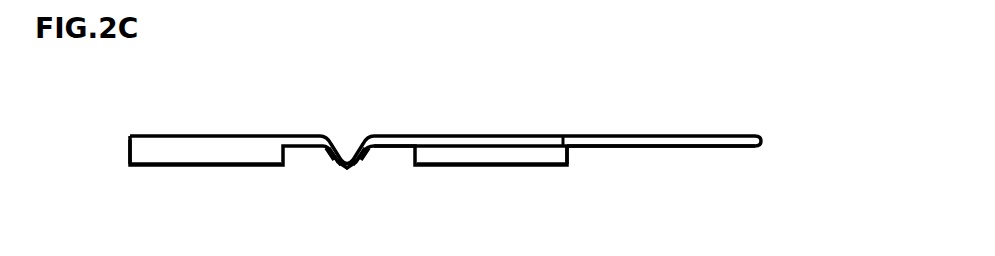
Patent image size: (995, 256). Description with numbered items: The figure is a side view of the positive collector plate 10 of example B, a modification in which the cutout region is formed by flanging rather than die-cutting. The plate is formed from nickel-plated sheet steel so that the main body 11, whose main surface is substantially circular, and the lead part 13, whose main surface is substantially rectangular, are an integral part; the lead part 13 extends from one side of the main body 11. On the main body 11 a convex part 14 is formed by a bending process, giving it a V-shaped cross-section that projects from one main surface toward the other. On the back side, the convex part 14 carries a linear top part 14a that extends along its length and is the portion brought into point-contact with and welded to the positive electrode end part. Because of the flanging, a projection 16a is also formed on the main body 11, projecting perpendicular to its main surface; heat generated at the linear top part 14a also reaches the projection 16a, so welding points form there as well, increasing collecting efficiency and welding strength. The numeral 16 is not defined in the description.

The positive collector plate 10 is at (427, 118).
The main body 11 is at (200, 137).
The lead part 13 is at (700, 137).
The convex part 14 is at (349, 144).
The linear top part 14a is at (238, 168).
The groove 16 is at (341, 171).
The projection 16a is at (158, 168).